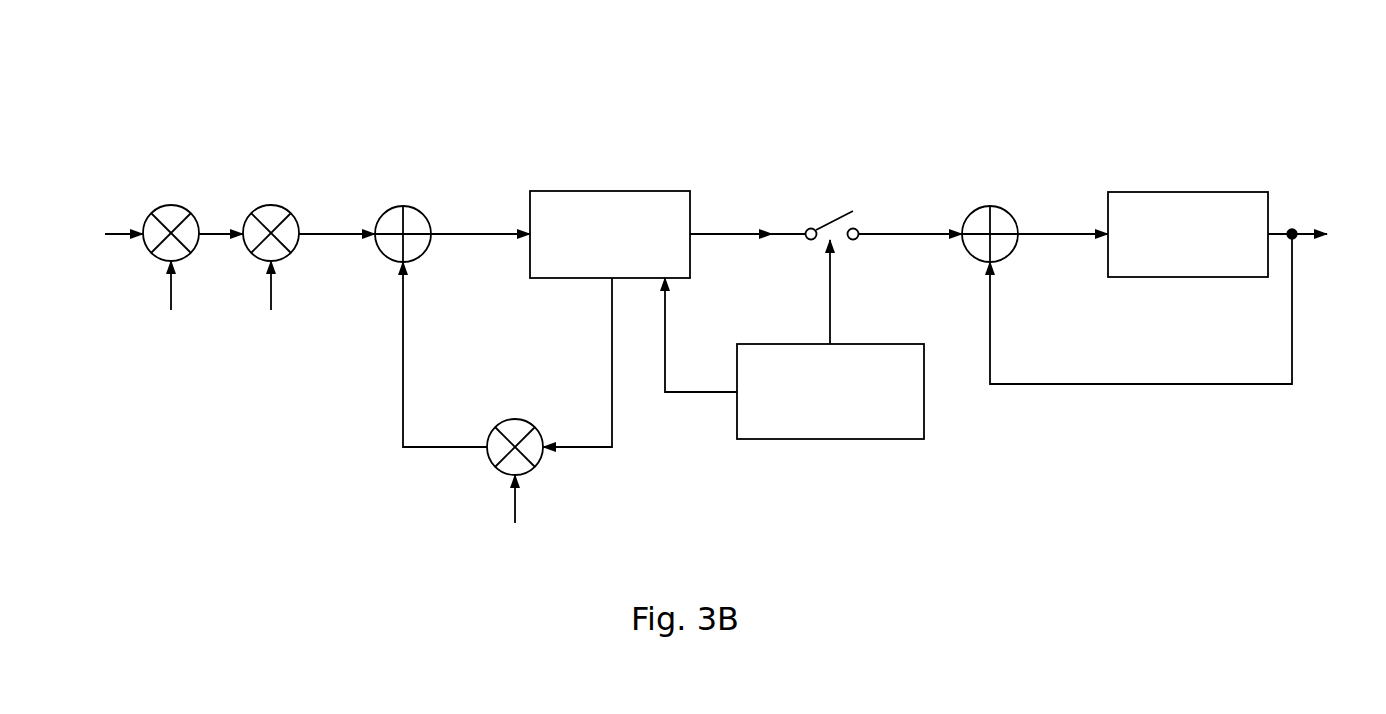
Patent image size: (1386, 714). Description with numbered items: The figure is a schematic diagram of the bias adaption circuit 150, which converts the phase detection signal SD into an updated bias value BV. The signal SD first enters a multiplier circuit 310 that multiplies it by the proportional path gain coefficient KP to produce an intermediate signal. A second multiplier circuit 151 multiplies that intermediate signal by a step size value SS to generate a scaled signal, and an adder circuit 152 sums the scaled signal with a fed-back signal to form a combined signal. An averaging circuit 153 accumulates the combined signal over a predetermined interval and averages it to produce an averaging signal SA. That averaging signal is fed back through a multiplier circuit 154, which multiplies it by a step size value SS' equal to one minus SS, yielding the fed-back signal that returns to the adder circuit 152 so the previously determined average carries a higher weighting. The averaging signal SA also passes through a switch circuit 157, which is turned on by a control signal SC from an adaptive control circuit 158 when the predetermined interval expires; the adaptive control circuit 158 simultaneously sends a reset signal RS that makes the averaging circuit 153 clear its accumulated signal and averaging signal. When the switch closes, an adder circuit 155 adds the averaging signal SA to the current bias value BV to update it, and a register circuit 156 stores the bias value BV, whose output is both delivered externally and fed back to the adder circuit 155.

The bias adaption circuit 150 is at (716, 310).
The multiplier circuit 310 is at (185, 206).
The multiplier circuit 151 is at (286, 206).
The adder circuit 152 is at (417, 209).
The averaging circuit 153 is at (610, 234).
The multiplier circuit 154 is at (495, 421).
The adder circuit 155 is at (1008, 209).
The register circuit 156 is at (1188, 234).
The switch circuit 157 is at (826, 222).
The adaptive control circuit 158 is at (830, 391).